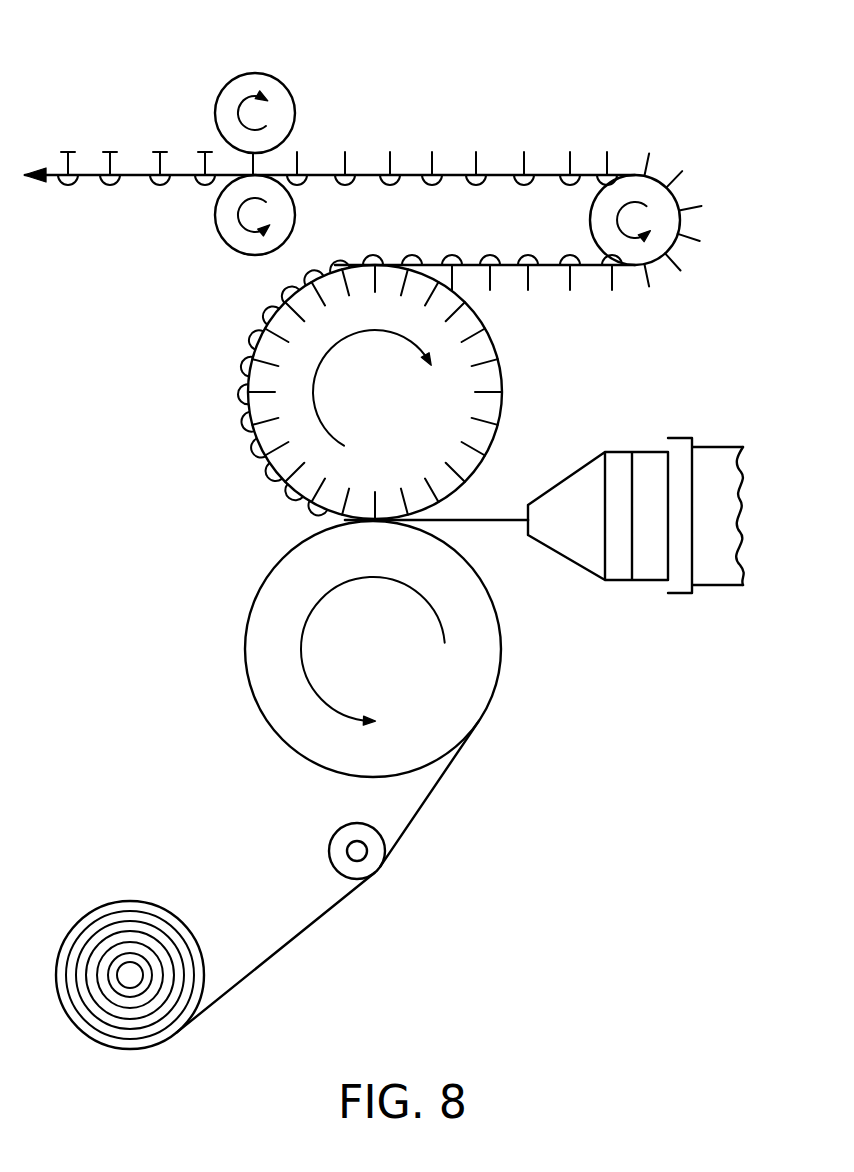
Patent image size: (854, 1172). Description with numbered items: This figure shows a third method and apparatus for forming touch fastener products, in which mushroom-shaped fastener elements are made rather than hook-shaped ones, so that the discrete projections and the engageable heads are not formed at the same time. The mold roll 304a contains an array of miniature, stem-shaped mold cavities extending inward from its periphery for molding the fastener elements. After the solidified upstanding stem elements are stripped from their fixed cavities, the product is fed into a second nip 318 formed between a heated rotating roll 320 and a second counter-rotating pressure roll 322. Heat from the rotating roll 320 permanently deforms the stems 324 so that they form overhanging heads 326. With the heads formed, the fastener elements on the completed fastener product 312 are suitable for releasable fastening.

The completed fastener product 312 is at (45, 173).
The overhanging heads 326 is at (157, 153).
The heated rotating roll 320 is at (260, 88).
The second nip 318 is at (257, 153).
The stems 324 is at (392, 158).
The second counter-rotating pressure roll 322 is at (238, 242).
The mold roll 304a is at (455, 390).